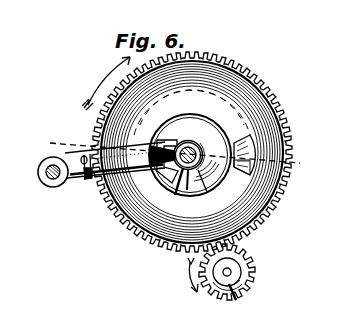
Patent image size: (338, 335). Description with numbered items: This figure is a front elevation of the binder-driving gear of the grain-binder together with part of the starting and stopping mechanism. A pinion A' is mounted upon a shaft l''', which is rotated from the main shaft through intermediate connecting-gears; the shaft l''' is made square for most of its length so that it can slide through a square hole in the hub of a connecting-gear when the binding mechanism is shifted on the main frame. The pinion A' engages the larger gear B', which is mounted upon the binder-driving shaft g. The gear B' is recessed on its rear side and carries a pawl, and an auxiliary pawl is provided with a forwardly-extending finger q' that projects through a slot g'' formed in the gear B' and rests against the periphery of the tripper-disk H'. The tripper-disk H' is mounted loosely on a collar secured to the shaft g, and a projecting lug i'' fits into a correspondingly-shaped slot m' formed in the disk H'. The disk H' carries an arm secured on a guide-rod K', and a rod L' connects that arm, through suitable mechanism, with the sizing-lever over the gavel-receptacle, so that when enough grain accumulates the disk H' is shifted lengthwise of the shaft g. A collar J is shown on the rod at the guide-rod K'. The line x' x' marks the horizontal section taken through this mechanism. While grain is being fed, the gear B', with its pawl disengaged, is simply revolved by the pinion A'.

The gear B' is at (187, 152).
The section line x' is at (173, 151).
The guide-rod K' is at (40, 184).
The rod L' is at (114, 185).
The collar J is at (91, 183).
The slot m' is at (169, 191).
The tripper-disk H' is at (190, 170).
The slot g'' is at (247, 181).
The finger q' is at (244, 140).
The binder-driving shaft g is at (196, 148).
The projecting lug i'' is at (170, 148).
The pinion A' is at (235, 272).
The shaft l''' is at (244, 304).